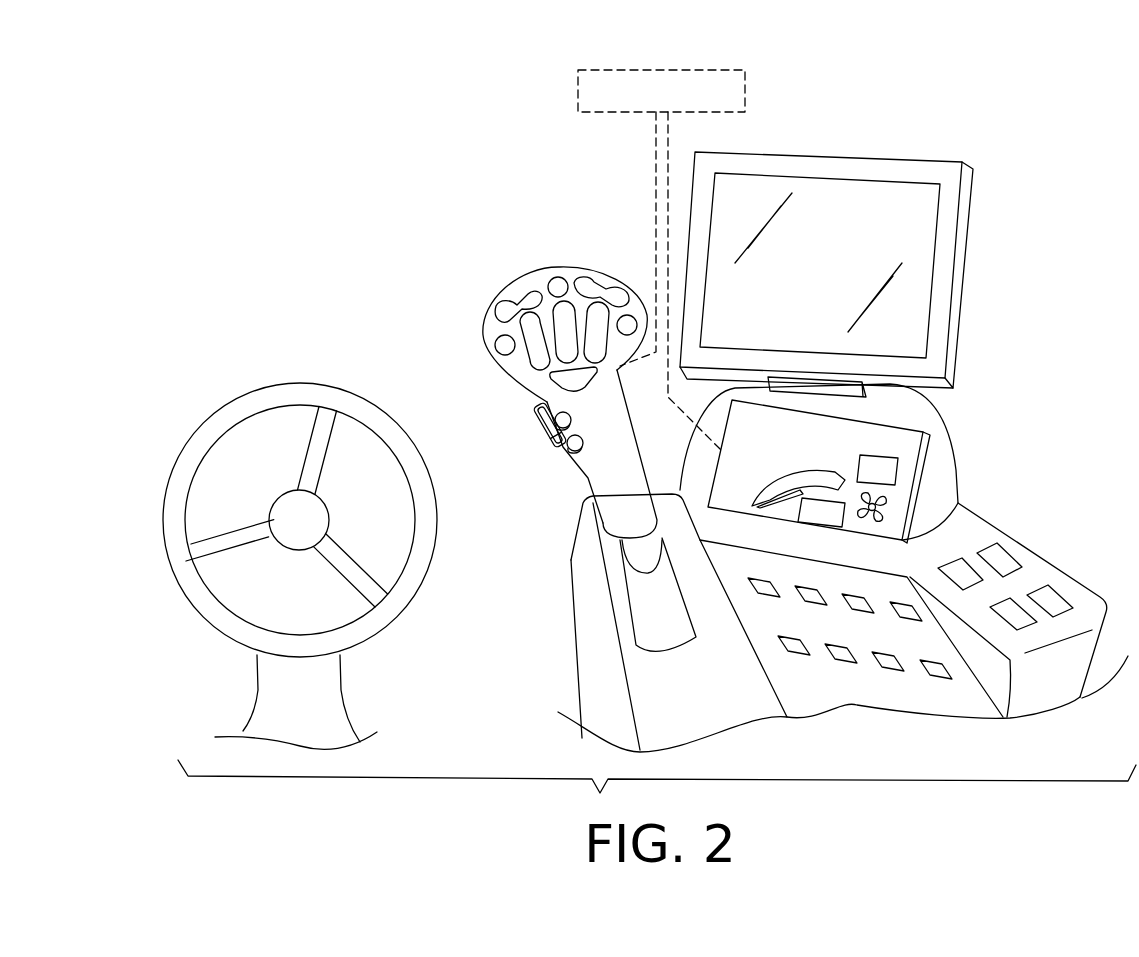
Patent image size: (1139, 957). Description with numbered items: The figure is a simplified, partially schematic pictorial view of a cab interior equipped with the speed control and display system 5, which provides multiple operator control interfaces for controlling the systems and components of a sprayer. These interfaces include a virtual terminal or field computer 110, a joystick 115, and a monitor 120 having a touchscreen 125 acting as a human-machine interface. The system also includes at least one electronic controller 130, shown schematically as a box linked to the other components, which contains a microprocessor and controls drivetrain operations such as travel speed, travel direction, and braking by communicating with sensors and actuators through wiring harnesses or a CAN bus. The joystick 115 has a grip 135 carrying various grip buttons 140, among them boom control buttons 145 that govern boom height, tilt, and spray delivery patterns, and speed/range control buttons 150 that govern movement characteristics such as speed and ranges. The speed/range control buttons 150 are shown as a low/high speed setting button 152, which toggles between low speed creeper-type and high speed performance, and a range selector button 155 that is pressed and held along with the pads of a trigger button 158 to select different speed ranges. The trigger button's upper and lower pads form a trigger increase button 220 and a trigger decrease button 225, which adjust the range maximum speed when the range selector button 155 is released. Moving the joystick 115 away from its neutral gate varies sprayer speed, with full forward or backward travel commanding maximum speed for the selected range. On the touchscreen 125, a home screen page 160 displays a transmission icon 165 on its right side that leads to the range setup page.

The speed control and display system 5 is at (1052, 196).
The field computer 110 is at (915, 153).
The joystick 115 is at (608, 412).
The monitor 120 is at (928, 470).
The touchscreen 125 is at (893, 440).
The electronic controller 130 is at (752, 92).
The grip 135 is at (481, 306).
The grip buttons 140 is at (546, 278).
The boom control buttons 145 is at (573, 305).
The speed/range control buttons 150 is at (548, 457).
The low/high speed setting button 152 is at (570, 417).
The range selector button 155 is at (574, 456).
The trigger button 158 is at (534, 420).
The home screen page 160 is at (817, 442).
The transmission icon 165 is at (896, 531).
The trigger increase button 220 is at (540, 410).
The trigger decrease button 225 is at (545, 438).